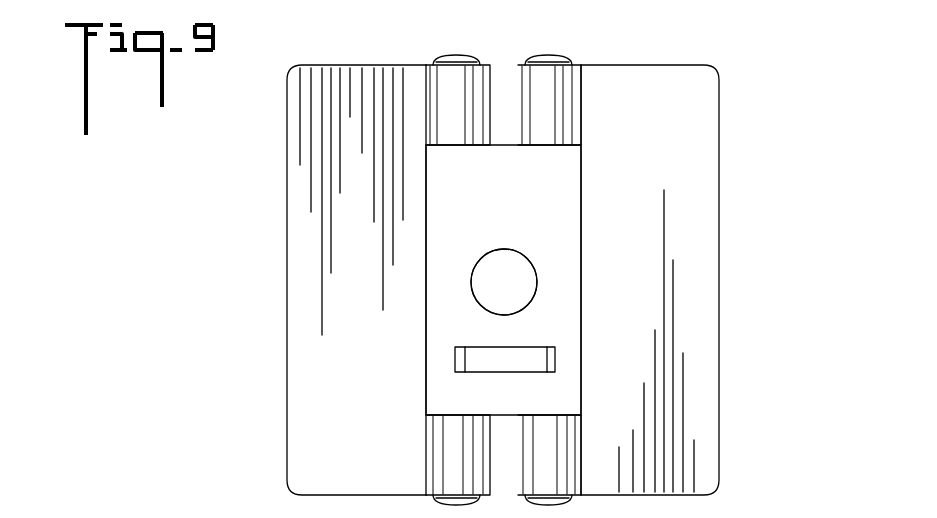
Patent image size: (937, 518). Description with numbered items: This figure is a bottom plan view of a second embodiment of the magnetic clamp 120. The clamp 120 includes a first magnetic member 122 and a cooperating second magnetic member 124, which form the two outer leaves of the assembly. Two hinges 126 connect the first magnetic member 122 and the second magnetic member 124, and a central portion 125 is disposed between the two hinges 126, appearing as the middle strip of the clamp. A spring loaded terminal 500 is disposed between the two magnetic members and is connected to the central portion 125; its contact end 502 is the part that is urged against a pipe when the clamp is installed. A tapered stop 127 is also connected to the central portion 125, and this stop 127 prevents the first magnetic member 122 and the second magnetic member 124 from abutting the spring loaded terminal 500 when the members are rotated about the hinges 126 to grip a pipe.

The magnetic clamp 120 is at (765, 62).
The first magnetic member 122 is at (720, 219).
The second magnetic member 124 is at (287, 213).
The central portion 125 is at (548, 315).
The hinges 126 is at (449, 102).
The tapered stop 127 is at (515, 372).
The spring loaded terminal 500 is at (524, 240).
The contact end 502 is at (485, 288).